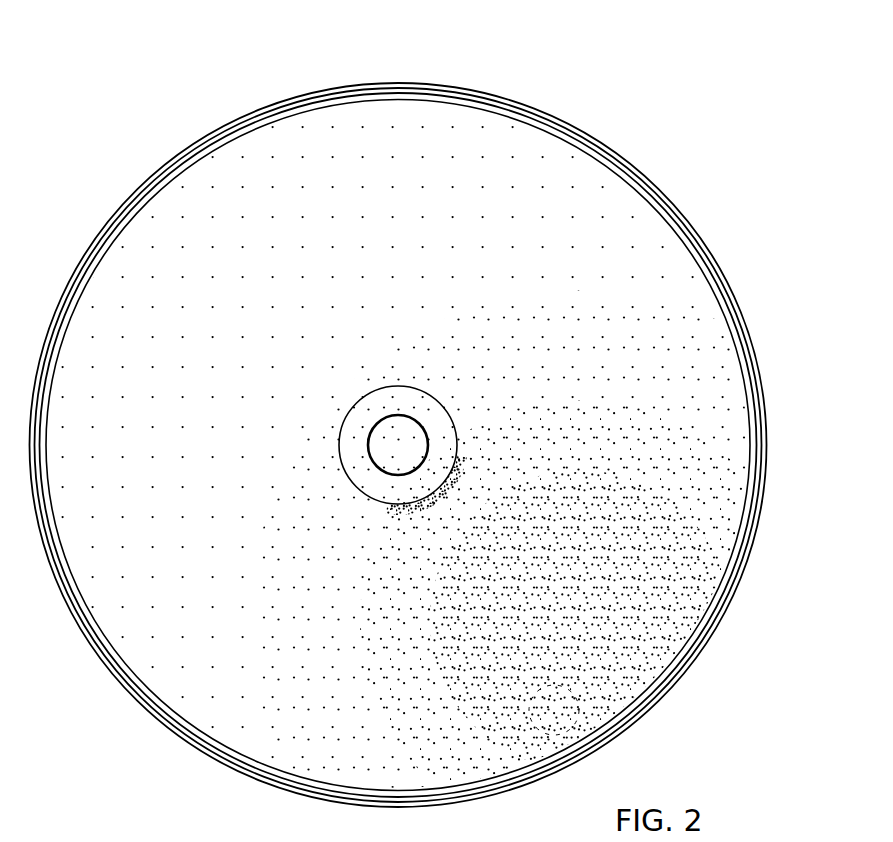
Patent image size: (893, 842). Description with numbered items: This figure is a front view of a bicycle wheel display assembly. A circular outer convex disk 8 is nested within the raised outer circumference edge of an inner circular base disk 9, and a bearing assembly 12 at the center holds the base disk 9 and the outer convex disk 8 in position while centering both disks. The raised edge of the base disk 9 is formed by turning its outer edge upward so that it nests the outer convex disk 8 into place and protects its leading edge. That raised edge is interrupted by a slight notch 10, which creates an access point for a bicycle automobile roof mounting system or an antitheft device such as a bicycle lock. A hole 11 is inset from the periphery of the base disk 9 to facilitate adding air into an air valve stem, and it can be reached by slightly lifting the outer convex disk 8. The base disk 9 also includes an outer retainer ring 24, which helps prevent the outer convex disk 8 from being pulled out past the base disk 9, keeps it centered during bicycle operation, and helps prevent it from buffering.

The outer convex disk 8 is at (700, 304).
The inner circular base disk 9 is at (753, 349).
The notch 10 is at (266, 92).
The hole 11 is at (578, 714).
The bearing assembly 12 is at (375, 406).
The outer retainer ring 24 is at (252, 117).